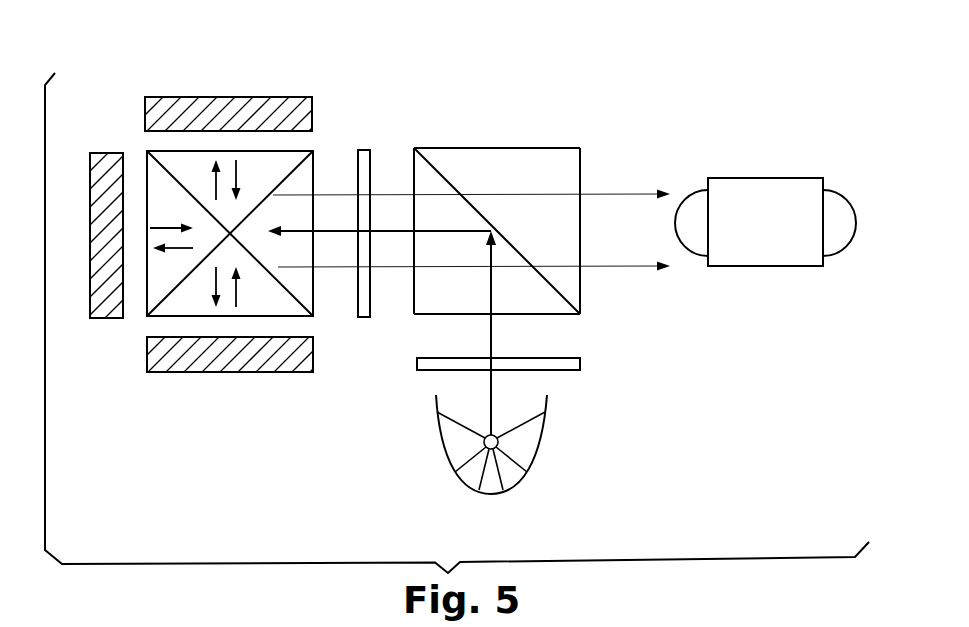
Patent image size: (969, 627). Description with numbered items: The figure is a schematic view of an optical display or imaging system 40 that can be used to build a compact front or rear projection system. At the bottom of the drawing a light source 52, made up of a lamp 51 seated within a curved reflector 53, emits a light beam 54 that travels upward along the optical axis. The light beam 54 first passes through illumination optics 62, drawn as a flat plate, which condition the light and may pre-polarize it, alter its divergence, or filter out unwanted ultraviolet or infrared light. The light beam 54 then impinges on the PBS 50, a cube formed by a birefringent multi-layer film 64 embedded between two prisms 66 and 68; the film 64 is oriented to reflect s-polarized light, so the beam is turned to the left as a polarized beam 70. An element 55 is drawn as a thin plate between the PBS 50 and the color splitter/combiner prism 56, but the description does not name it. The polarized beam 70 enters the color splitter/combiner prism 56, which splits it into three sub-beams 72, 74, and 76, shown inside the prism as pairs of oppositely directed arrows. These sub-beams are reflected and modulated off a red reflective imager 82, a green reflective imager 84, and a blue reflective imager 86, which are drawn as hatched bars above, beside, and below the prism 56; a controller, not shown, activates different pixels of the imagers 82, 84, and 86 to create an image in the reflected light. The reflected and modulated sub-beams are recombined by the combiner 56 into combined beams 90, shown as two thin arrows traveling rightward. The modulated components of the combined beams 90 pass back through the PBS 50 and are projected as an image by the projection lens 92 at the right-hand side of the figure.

The optical system 40 is at (717, 62).
The PBS 50 is at (497, 221).
The lamp 51 is at (485, 445).
The light source 52 is at (512, 467).
The reflector 53 is at (493, 497).
The light beam 54 is at (492, 377).
The optical plate 55 is at (364, 150).
The color splitter/combiner prism 56 is at (314, 176).
The illumination optics 62 is at (582, 362).
The birefringent multi-layer film 64 is at (432, 160).
The prism 66 is at (420, 302).
The prism 68 is at (567, 219).
The polarized beam 70 is at (383, 230).
The sub-beam 72 is at (213, 192).
The sub-beam 74 is at (162, 225).
The sub-beam 76 is at (215, 277).
The red reflective imager 82 is at (179, 103).
The green reflective imager 84 is at (106, 320).
The blue reflective imager 86 is at (208, 360).
The combined beams 90 is at (615, 188).
The projection lens 92 is at (777, 252).